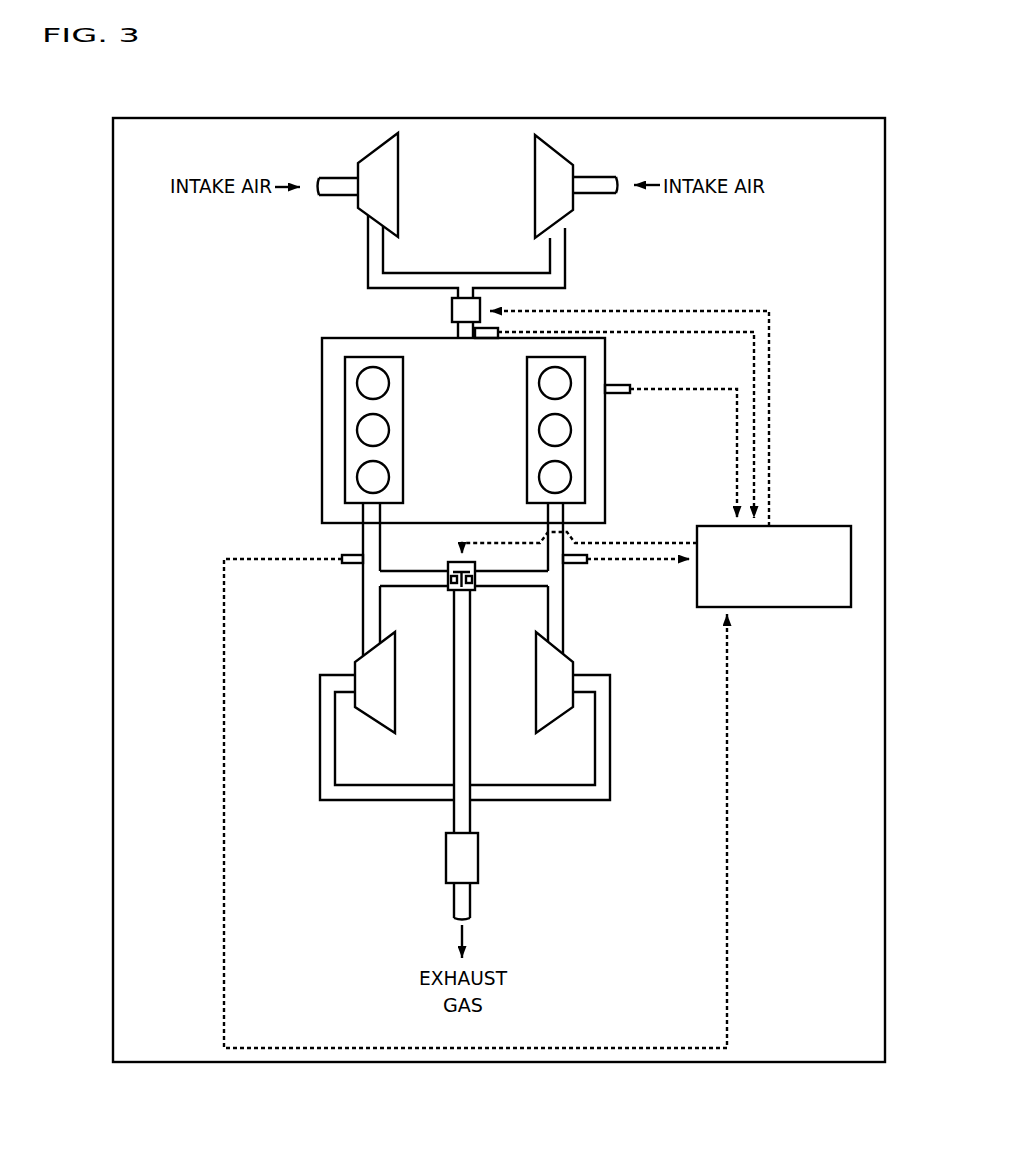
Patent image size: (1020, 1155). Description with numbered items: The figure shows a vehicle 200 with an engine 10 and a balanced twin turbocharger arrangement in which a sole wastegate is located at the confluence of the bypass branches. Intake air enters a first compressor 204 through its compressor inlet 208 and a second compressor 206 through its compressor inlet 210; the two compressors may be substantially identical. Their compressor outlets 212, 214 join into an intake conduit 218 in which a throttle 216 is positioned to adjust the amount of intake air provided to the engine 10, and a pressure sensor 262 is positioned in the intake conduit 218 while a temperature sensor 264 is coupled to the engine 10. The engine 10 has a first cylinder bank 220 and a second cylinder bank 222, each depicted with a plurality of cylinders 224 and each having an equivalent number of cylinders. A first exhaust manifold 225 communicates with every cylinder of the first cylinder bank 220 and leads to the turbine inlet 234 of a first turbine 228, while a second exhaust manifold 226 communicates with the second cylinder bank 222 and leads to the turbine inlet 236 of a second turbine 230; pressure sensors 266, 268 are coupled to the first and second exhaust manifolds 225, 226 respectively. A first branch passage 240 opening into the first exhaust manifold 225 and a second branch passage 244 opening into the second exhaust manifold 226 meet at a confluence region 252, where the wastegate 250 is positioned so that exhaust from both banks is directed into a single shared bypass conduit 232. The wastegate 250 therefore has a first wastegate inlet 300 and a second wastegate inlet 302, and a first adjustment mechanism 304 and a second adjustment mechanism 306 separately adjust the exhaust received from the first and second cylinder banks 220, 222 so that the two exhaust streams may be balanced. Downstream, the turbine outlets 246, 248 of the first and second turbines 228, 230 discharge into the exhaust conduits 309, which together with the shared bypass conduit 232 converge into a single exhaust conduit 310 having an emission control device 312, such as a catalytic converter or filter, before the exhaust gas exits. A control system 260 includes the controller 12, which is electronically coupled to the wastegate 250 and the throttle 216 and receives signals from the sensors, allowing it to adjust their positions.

The vehicle 200 is at (147, 118).
The engine 10 is at (453, 398).
The controller 12 is at (764, 590).
The first compressor 204 is at (379, 150).
The second compressor 206 is at (552, 150).
The compressor inlet 208 is at (348, 186).
The compressor inlet 210 is at (588, 186).
The compressor outlet 212 is at (372, 244).
The compressor outlet 214 is at (560, 244).
The throttle 216 is at (452, 310).
The intake conduit 218 is at (458, 332).
The pressure sensor 262 is at (497, 331).
The temperature sensor 264 is at (621, 394).
The first cylinder bank 220 is at (405, 452).
The second cylinder bank 222 is at (527, 452).
The cylinders 224 is at (389, 383).
The first exhaust manifold 225 is at (363, 540).
The second exhaust manifold 226 is at (566, 528).
The first branch passage 240 is at (393, 571).
The second branch passage 244 is at (520, 571).
The confluence region 252 is at (445, 555).
The pressure sensor 266 is at (350, 565).
The pressure sensor 268 is at (577, 565).
The turbine inlet 234 is at (372, 632).
The turbine inlet 236 is at (562, 632).
The first turbine 228 is at (372, 714).
The second turbine 230 is at (555, 714).
The first turbine outlet passage 246 is at (346, 682).
The second turbine outlet passage 248 is at (584, 682).
The exhaust conduits 309 is at (320, 765).
The shared bypass conduit 232 is at (472, 713).
The first wastegate inlet 300 is at (440, 578).
The second wastegate inlet 302 is at (486, 577).
The first adjustment mechanism 304 is at (455, 593).
The second adjustment mechanism 306 is at (472, 579).
The wastegate 250 is at (471, 598).
The single exhaust conduit 310 is at (472, 808).
The emission control device 312 is at (478, 853).
The control system 260 is at (866, 564).